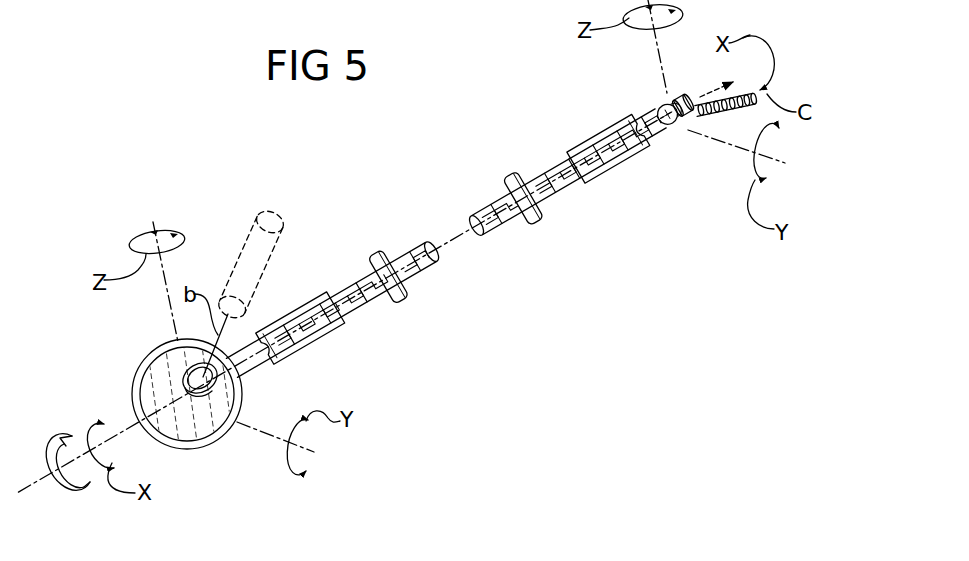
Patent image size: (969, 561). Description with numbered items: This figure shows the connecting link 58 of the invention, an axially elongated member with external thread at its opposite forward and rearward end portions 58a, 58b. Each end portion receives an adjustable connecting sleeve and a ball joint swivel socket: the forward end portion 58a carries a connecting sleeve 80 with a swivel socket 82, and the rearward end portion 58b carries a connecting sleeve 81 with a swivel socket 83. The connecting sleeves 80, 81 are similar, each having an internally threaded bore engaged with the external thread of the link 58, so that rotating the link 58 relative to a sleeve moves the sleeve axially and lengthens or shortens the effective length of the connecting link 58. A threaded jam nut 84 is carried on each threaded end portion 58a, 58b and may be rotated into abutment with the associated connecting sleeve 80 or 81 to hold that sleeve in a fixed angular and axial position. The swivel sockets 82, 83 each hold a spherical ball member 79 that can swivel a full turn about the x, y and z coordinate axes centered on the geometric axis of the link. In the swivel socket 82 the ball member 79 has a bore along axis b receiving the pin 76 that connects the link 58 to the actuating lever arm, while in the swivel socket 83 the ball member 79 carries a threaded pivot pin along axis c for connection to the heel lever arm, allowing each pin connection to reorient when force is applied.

The connecting link 58 is at (450, 318).
The forward end portion 58a is at (272, 358).
The rearward end portion 58b is at (621, 166).
The pin 76 is at (277, 260).
The ball member 79 is at (193, 427).
The connecting sleeve 80 is at (336, 342).
The connecting sleeve 81 is at (578, 154).
The swivel socket 82 is at (190, 466).
The swivel socket 83 is at (657, 118).
The jam nut 84 is at (377, 263).